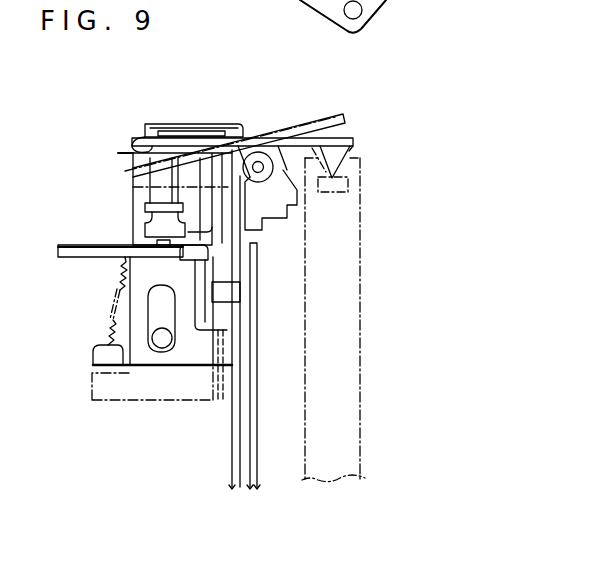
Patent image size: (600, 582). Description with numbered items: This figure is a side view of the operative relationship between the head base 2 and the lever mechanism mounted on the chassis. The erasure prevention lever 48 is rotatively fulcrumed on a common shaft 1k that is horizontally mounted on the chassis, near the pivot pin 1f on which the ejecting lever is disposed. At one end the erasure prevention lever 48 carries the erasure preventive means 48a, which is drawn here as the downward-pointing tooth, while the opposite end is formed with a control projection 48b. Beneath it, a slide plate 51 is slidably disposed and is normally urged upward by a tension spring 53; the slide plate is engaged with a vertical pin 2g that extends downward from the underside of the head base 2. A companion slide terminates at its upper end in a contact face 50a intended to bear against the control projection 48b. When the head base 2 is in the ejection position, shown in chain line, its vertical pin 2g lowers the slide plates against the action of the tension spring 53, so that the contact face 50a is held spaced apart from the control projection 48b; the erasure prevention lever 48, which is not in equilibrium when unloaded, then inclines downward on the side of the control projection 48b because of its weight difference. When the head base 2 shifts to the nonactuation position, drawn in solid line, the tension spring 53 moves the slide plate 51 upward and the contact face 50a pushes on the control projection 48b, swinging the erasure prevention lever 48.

The pivot pin 1f is at (336, 24).
The common shaft 1k is at (258, 160).
The head base 2 is at (257, 396).
The vertical pin 2g is at (223, 287).
The erasure prevention lever 48 is at (290, 141).
The erasure preventive means 48a is at (343, 168).
The control projection 48b is at (143, 150).
The contact face 50a is at (133, 163).
The slide plate 51 is at (135, 220).
The tension spring 53 is at (107, 328).